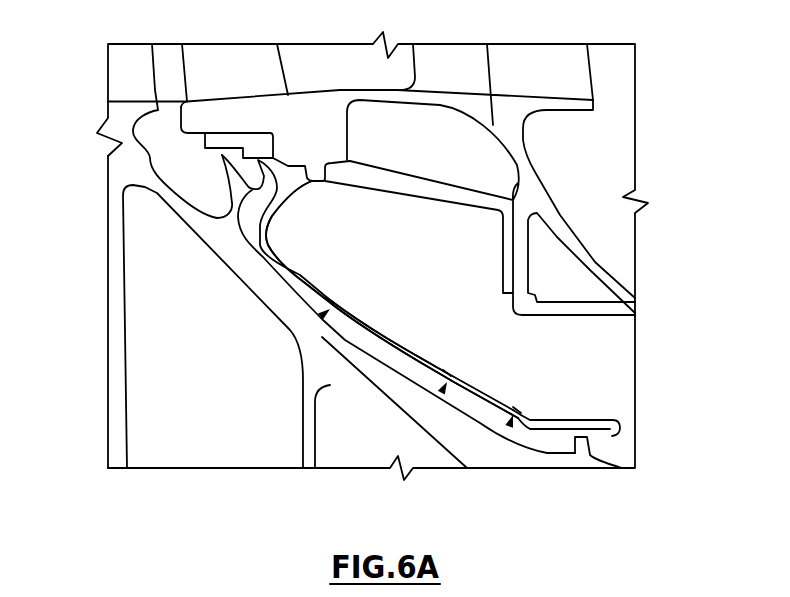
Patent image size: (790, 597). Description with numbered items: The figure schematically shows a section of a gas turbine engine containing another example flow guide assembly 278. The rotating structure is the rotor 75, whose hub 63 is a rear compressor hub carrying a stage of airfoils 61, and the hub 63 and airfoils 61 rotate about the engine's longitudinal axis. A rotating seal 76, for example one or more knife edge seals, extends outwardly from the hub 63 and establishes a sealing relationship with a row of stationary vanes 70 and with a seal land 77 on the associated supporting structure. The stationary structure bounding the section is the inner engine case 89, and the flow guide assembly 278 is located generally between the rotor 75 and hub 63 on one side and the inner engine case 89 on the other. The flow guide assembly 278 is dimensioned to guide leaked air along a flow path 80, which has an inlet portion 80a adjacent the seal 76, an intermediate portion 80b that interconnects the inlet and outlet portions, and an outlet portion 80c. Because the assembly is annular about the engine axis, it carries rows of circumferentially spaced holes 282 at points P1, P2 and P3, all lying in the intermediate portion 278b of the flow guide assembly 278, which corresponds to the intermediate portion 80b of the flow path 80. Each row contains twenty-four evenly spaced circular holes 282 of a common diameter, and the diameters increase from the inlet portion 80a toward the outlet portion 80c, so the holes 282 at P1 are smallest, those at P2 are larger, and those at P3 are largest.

The airfoils 61 is at (133, 62).
The stationary vanes 70 is at (243, 62).
The rotor 75 is at (108, 112).
The seal land 77 is at (207, 134).
The rotating seal 76 is at (200, 230).
The inner engine case 89 is at (534, 164).
The flow path 80 is at (350, 333).
The inlet portion 80a is at (296, 224).
The intermediate portion 80b is at (358, 374).
The outlet portion 80c is at (606, 388).
The flow guide assembly 278 is at (473, 388).
The intermediate portion of the flow guide assembly 278b is at (405, 333).
The holes 282 is at (322, 316).
The first point P1 is at (330, 305).
The second point P2 is at (447, 373).
The third point P3 is at (517, 412).
The hub 63 is at (547, 453).